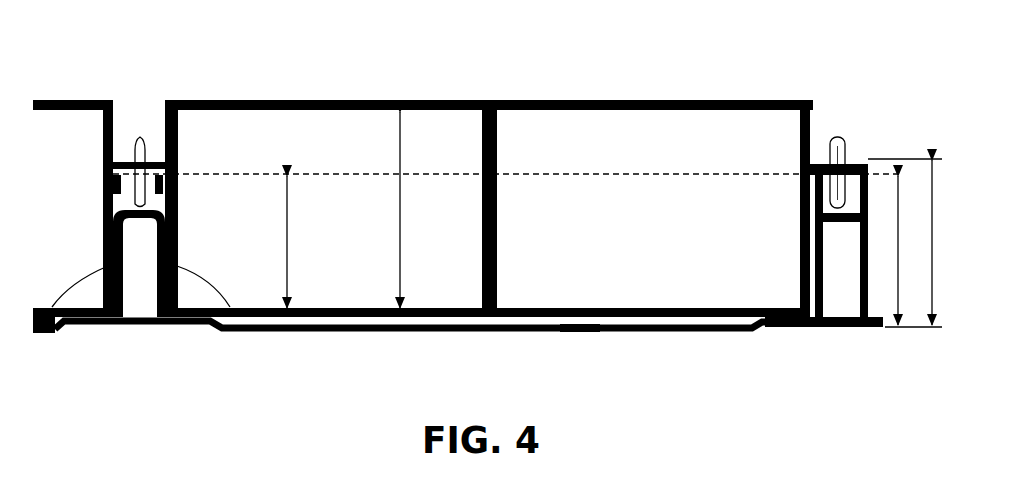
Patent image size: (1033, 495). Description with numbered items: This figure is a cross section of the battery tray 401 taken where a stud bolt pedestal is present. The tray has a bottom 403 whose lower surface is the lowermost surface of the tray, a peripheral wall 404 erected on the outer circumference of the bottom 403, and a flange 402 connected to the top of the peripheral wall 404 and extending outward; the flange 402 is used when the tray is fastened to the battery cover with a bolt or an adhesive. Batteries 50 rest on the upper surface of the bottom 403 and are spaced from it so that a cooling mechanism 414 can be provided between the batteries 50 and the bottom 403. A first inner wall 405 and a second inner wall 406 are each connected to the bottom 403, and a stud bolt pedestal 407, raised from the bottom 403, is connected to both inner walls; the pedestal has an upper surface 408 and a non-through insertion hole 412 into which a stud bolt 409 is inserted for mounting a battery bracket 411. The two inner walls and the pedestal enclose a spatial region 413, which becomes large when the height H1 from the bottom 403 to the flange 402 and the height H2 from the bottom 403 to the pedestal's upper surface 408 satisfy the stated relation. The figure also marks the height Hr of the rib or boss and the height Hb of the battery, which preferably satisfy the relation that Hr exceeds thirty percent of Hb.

The battery tray 401 is at (590, 80).
The battery 50 is at (350, 125).
The battery bracket 411 is at (88, 94).
The first inner wall 405 is at (174, 232).
The stud bolt pedestal 407 is at (170, 202).
The upper surface of stud bolt pedestal 408 is at (112, 176).
The insertion hole 412 is at (118, 200).
The stud bolt 409 is at (141, 136).
The spatial region surrounded by first inner wall, second inner wall and stud bolt p 413 is at (142, 300).
The second inner wall 406 is at (116, 242).
The bottom 403 is at (487, 333).
The cooling mechanism 414 is at (576, 332).
The peripheral wall 404 is at (808, 245).
The flange 402 is at (852, 164).
The height of the battery Hb is at (400, 210).
The height of the rib or the boss Hr is at (287, 242).
The height from bottom to flange H1 is at (905, 243).
The height from bottom to upper surface of stud bolt pedestal H2 is at (896, 250).